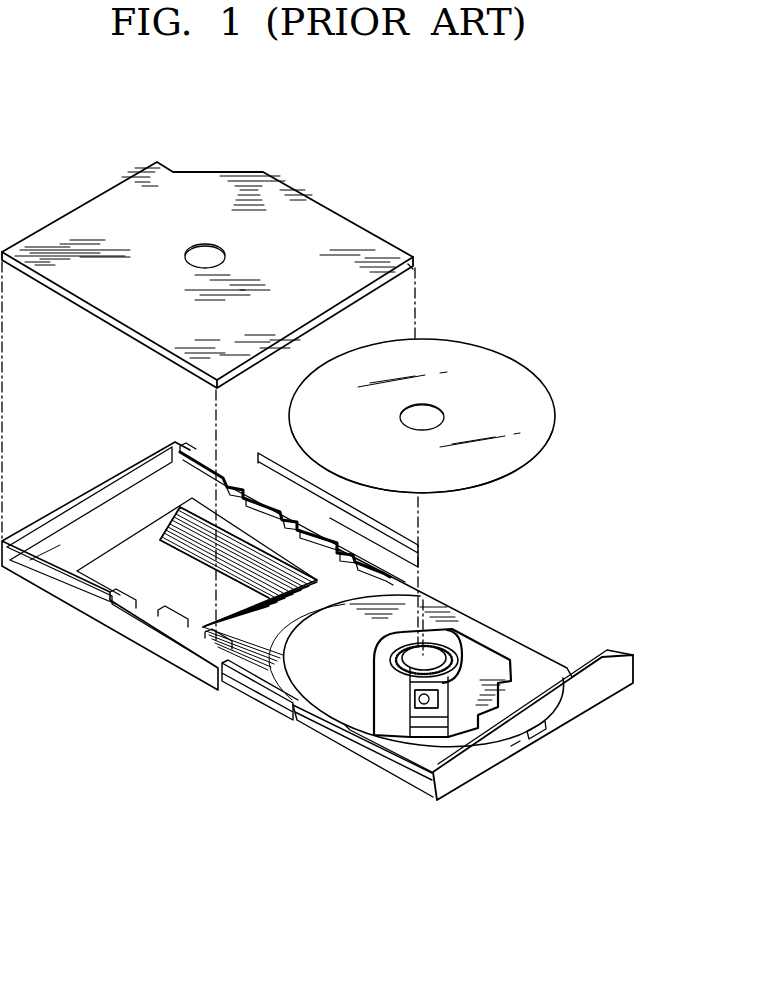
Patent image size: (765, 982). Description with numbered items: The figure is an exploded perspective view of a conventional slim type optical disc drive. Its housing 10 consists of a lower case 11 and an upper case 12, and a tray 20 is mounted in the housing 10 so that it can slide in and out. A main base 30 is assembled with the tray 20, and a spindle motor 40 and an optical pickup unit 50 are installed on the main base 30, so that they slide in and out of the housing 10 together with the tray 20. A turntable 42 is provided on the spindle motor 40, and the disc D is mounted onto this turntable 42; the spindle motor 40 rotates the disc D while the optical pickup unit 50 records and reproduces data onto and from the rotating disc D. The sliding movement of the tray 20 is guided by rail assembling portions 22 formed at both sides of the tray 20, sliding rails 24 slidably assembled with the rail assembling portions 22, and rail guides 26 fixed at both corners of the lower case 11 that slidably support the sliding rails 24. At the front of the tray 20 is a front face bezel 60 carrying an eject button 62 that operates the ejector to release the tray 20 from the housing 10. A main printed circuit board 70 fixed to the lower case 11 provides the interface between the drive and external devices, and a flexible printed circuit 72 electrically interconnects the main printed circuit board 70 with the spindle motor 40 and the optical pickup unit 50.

The housing 10 is at (56, 373).
The lower case 11 is at (133, 464).
The upper case 12 is at (145, 345).
The tray 20 is at (428, 757).
The rail assembling portions 22 is at (343, 742).
The sliding rails 24 is at (268, 706).
The rail guides 26 is at (182, 450).
The main base 30 is at (498, 663).
The spindle motor 40 is at (470, 647).
The turntable 42 is at (452, 643).
The optical pickup unit 50 is at (410, 694).
The front face bezel 60 is at (598, 693).
The eject button 62 is at (537, 738).
The main printed circuit board 70 is at (78, 534).
The flexible printed circuit 72 is at (187, 541).
The disc D is at (496, 358).